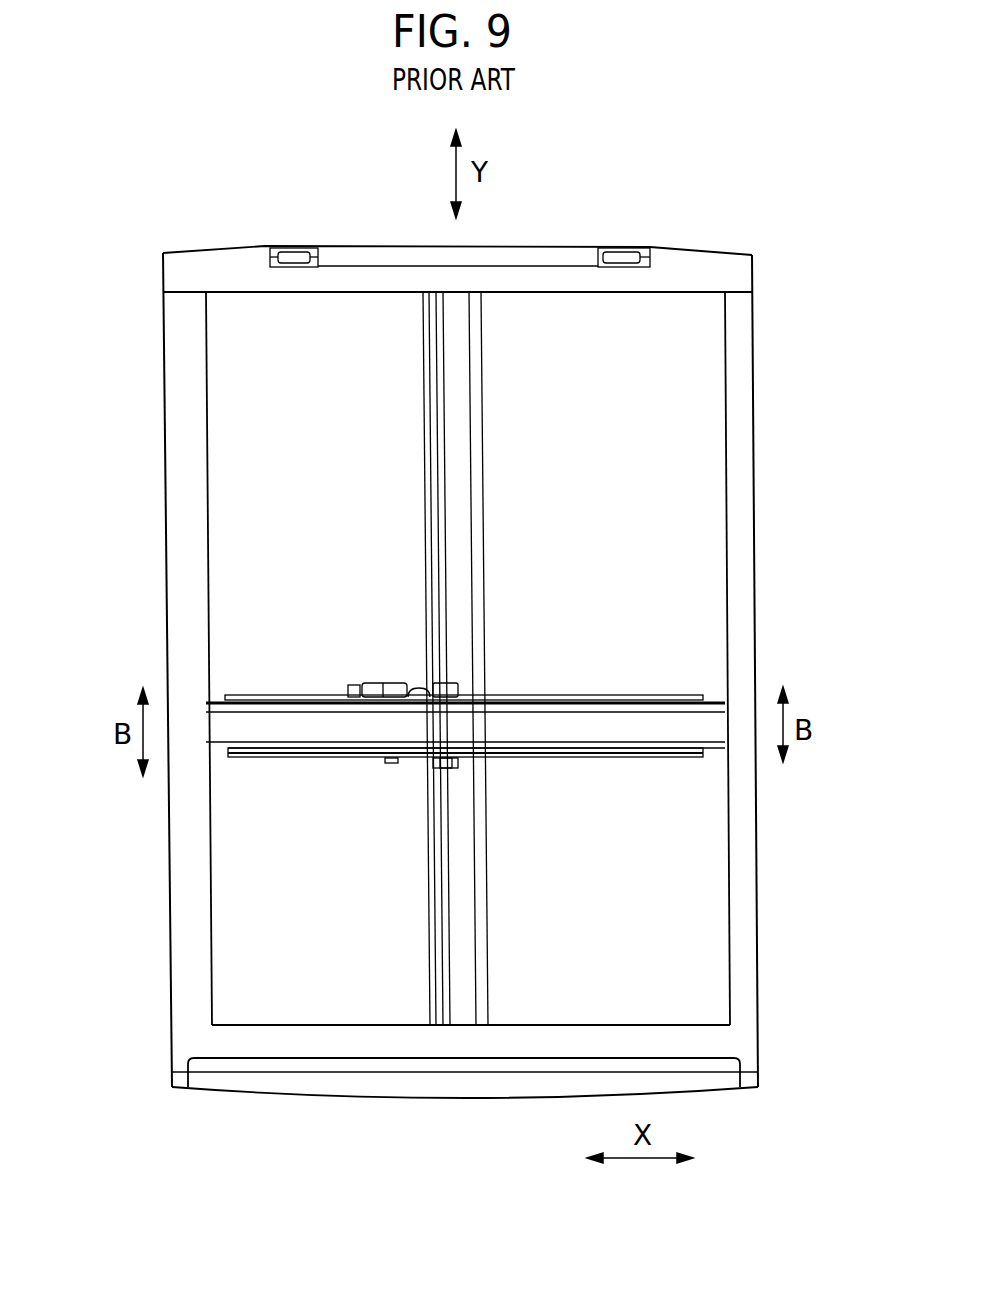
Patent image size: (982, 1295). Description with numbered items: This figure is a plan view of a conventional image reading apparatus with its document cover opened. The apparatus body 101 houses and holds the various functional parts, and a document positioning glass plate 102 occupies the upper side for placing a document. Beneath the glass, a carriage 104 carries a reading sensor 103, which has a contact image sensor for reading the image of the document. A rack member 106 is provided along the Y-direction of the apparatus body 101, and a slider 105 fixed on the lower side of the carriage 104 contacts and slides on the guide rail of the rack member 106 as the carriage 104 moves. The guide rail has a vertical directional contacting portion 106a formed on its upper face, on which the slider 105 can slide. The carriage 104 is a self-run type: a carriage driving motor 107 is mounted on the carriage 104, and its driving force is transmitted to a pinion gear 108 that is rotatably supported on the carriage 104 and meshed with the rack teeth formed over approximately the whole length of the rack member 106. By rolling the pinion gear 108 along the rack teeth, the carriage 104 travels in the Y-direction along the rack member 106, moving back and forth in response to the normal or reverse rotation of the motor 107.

The apparatus body 101 is at (720, 262).
The document positioning glass plate 102 is at (705, 430).
The reading sensor 103 is at (620, 715).
The carriage 104 is at (535, 695).
The slider 105 is at (445, 768).
The rack member 106 is at (435, 505).
The vertical directional contacting portion 106a is at (445, 425).
The carriage driving motor 107 is at (355, 685).
The pinion gear 108 is at (405, 683).